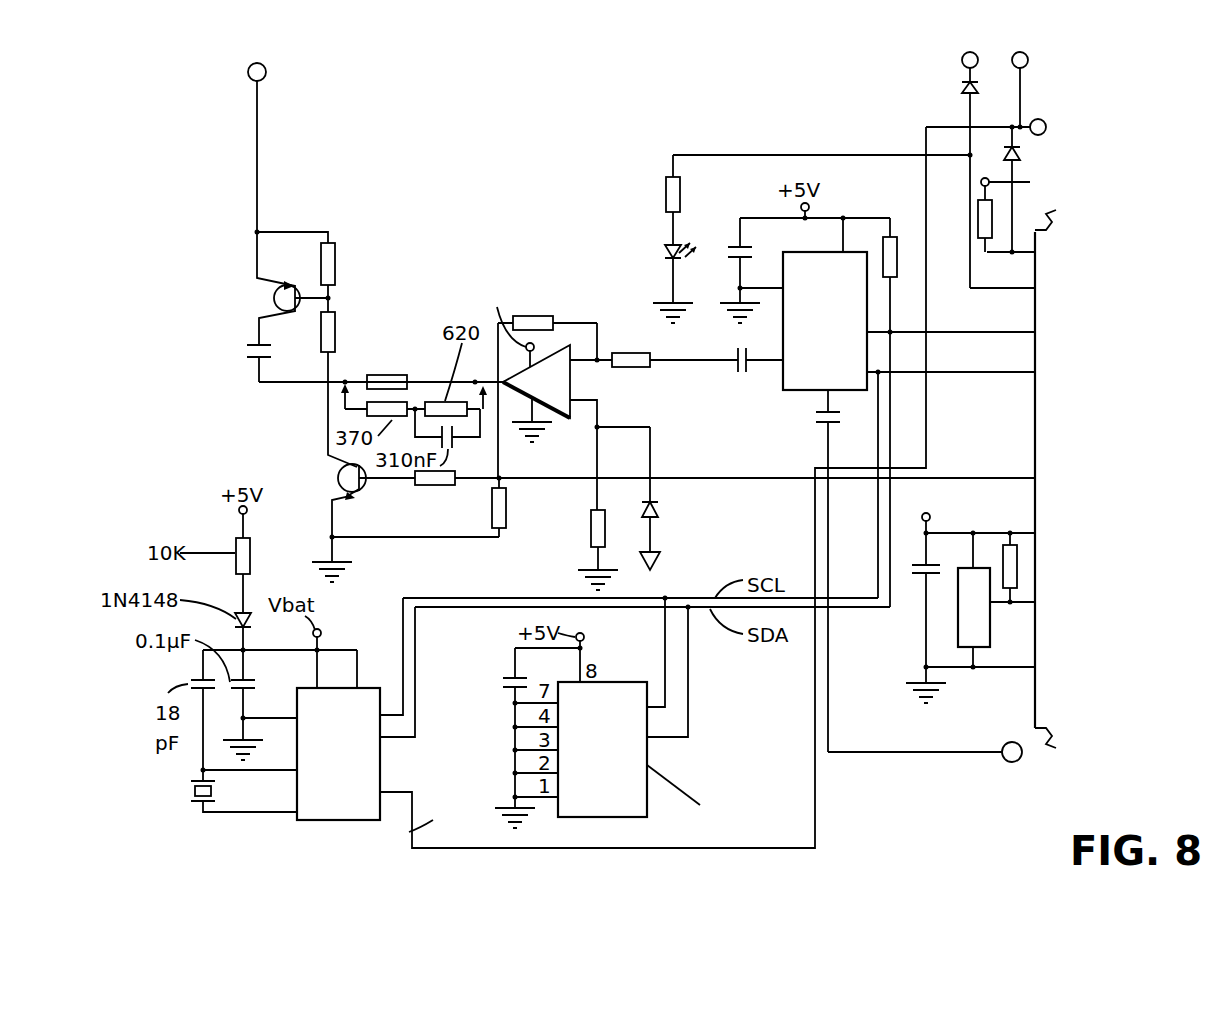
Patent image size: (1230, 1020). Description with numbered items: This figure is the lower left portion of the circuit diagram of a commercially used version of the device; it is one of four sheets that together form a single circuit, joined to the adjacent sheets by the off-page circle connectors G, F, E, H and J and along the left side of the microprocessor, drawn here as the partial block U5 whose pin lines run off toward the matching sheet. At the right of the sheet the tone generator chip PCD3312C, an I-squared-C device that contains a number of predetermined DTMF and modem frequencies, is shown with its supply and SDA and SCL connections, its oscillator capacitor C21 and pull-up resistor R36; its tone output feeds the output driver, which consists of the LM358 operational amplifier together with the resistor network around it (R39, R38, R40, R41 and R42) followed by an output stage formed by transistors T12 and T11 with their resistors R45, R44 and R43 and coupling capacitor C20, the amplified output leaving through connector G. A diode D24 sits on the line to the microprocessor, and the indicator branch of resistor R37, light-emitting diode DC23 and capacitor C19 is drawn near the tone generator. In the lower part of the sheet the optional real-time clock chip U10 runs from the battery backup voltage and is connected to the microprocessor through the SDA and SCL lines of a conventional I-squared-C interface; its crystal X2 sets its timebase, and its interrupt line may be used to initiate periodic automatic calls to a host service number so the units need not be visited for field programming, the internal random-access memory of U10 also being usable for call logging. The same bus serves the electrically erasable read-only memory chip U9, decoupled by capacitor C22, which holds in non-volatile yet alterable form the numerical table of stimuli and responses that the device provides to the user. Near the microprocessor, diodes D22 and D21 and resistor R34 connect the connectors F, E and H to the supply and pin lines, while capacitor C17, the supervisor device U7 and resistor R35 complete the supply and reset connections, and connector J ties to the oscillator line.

The off-page circle connector G is at (265, 78).
The output stage transistor T11 is at (294, 284).
The resistor 100K R45 is at (337, 257).
The resistor 10K R44 is at (337, 320).
The resistor 560 R43 is at (378, 375).
The capacitor 10uF/16V C20 is at (240, 350).
The output stage transistor T12 is at (338, 478).
The resistor 100K R42 is at (409, 499).
The resistor 1K R41 is at (454, 528).
The resistor 100K R40 is at (591, 520).
The resistor 100K R39 is at (537, 316).
The resistor 39K R38 is at (630, 352).
The resistor 2K7 R37 is at (666, 207).
The operational amplifier LM358 is at (567, 422).
The green LED DC23 is at (696, 268).
The capacitor 0.1uF C19 is at (742, 246).
The resistor 10K R36 is at (896, 240).
The tone generator chip PCD3312C is at (909, 425).
The oscillator capacitor 33pF C21 is at (814, 422).
The diode 1N4148 D24 is at (657, 509).
The capacitor 0.1uF C22 is at (500, 684).
The electrically erasable read-only memory chip U9 is at (647, 682).
The real-time clock chip U10 is at (380, 808).
The crystal 32.768 KHz X2 is at (197, 797).
The diode 1N4148 D22 is at (965, 88).
The diode 1N4148 D21 is at (1006, 153).
The resistor 100K R34 is at (975, 220).
The microcontroller U5 is at (1035, 436).
The capacitor 0.1uF C17 is at (913, 568).
The voltage supervisor 34164 U7 is at (958, 632).
The resistor 100K R35 is at (1006, 590).
The off-page circle connector F is at (978, 57).
The off-page circle connector E is at (1028, 57).
The off-page circle connector H is at (1046, 125).
The off-page circle connector J is at (1010, 763).